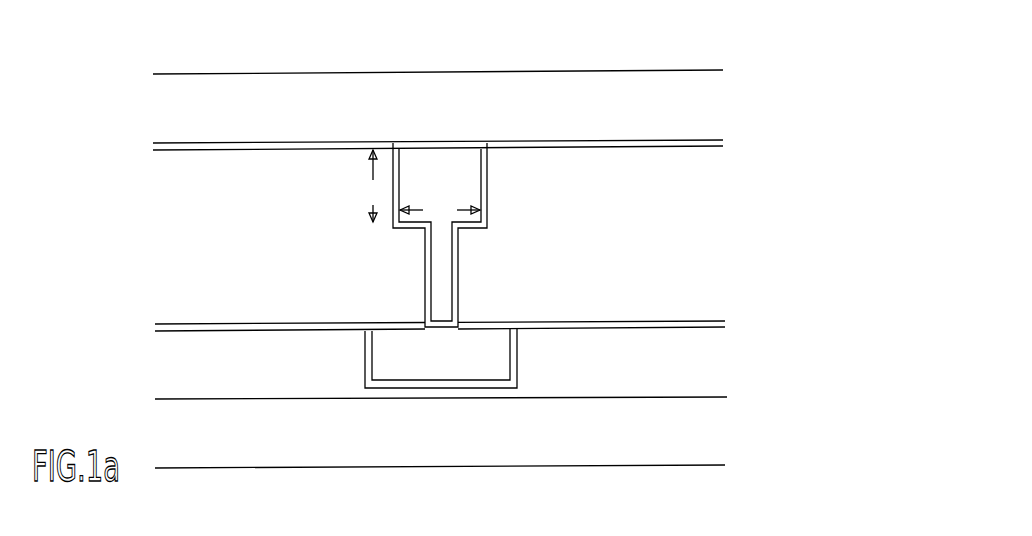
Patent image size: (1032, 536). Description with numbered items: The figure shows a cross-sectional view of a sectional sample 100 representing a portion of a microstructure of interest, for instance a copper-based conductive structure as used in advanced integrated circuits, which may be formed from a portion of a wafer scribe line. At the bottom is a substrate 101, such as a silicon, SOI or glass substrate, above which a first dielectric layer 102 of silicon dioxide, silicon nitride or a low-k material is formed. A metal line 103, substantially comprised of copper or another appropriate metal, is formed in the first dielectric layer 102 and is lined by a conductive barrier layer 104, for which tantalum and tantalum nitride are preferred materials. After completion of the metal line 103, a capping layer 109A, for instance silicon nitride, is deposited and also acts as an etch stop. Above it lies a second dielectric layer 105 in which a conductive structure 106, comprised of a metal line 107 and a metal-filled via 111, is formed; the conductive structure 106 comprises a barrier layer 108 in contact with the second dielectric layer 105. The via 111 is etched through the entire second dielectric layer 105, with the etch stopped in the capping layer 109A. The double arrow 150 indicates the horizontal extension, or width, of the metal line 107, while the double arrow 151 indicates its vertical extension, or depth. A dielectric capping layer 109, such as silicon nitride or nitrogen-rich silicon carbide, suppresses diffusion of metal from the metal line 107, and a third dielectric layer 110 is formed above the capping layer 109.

The sectional sample 100 is at (727, 49).
The substrate 101 is at (710, 439).
The first dielectric layer 102 is at (708, 371).
The metal line 103 is at (457, 367).
The conductive barrier layer 104 is at (513, 372).
The second dielectric layer 105 is at (707, 257).
The conductive structure 106 is at (465, 300).
The metal line 107 is at (456, 180).
The barrier layer 108 is at (457, 256).
The dielectric capping layer 109 is at (723, 141).
The capping layer 109A is at (725, 322).
The third dielectric layer 110 is at (707, 106).
The via 111 is at (432, 256).
The double arrow 150 is at (440, 209).
The double arrow 151 is at (371, 186).